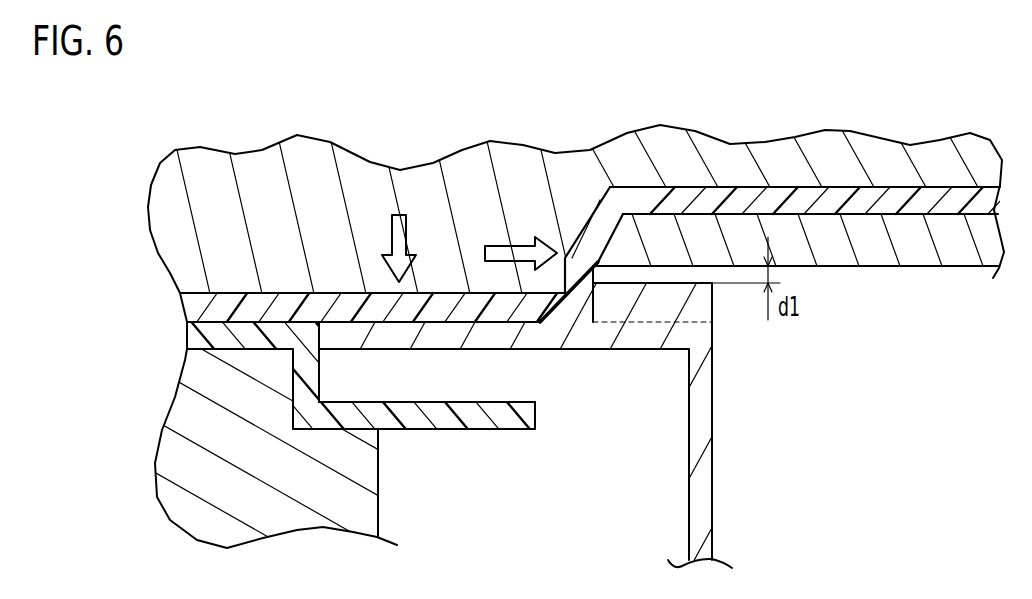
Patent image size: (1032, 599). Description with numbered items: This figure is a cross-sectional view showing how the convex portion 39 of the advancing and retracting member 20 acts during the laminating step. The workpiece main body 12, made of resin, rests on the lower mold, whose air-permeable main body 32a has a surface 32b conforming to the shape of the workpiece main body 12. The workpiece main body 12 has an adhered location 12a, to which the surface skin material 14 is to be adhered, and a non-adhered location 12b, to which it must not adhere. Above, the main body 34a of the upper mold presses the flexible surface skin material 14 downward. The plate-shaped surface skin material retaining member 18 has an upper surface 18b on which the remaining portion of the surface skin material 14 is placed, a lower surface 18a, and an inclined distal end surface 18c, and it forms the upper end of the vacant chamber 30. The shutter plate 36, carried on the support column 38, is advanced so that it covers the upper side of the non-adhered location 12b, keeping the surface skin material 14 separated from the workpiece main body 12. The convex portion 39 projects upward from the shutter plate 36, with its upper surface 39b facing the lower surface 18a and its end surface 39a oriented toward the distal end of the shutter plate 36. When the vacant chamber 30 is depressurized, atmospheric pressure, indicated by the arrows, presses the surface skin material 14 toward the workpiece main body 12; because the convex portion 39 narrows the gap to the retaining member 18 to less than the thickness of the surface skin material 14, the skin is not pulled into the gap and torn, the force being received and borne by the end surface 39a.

The workpiece main body 12 is at (235, 330).
The adhered location 12a is at (273, 340).
The non-adhered location 12b is at (407, 416).
The surface skin material 14 is at (450, 316).
The surface skin material retaining member 18 is at (772, 230).
The lower surface 18a is at (900, 267).
The upper surface 18b is at (831, 214).
The distal end surface 18c is at (594, 227).
The advancing and retracting member 20 is at (547, 359).
The vacant chamber 30 is at (578, 508).
The main body 32a is at (170, 448).
The surface 32b is at (227, 358).
The main body 34a is at (260, 163).
The shutter plate 36 is at (490, 340).
The support column 38 is at (702, 478).
The convex portion 39 is at (547, 359).
The end surface 39a is at (590, 305).
The upper surface 39b is at (669, 283).